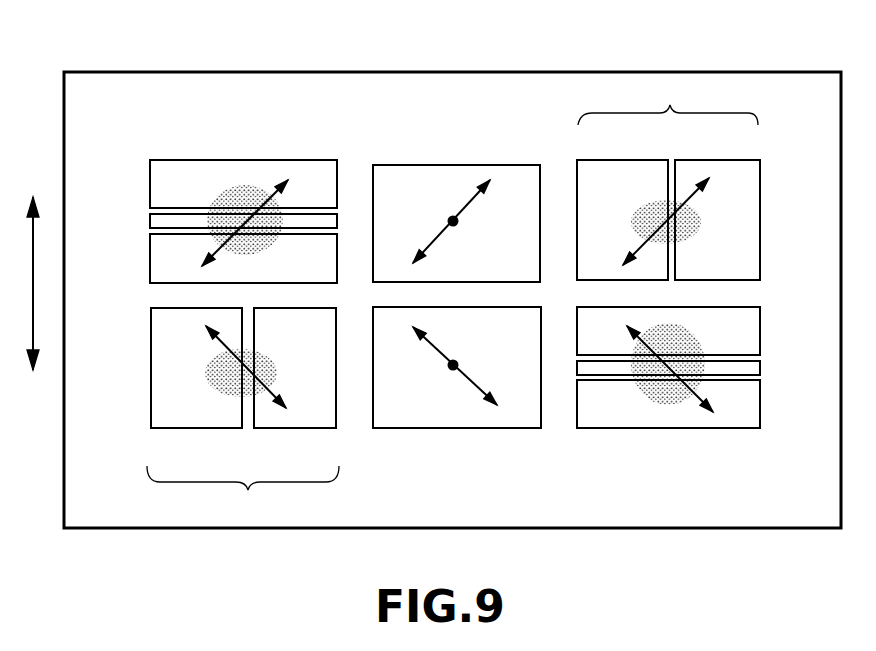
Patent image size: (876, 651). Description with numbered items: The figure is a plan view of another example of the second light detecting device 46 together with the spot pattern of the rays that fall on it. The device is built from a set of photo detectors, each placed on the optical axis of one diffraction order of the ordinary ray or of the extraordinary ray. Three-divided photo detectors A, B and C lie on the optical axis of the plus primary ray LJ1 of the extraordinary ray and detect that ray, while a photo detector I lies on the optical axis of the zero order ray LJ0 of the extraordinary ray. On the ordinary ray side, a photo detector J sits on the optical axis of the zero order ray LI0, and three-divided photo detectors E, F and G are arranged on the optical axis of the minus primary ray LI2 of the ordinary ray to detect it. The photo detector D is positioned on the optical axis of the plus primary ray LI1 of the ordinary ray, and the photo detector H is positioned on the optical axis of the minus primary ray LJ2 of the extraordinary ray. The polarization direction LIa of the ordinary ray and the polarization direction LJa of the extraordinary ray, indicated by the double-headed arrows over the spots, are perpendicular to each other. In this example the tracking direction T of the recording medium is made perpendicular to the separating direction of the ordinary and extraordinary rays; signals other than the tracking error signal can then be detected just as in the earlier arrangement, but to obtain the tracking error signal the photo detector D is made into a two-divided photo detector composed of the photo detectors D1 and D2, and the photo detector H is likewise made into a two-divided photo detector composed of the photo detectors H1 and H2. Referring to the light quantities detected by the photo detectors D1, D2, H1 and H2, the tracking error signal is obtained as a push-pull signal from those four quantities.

The second light detecting device 46 is at (727, 71).
The tracking direction T is at (25, 283).
The photo detector A is at (152, 188).
The photo detector B is at (152, 220).
The photo detector C is at (152, 265).
The photo detector D is at (243, 492).
The photo detector D1 is at (204, 420).
The photo detector D2 is at (303, 420).
The photo detector E is at (752, 403).
The photo detector F is at (752, 368).
The photo detector G is at (752, 333).
The photo detector H is at (668, 102).
The photo detector H1 is at (722, 172).
The photo detector H2 is at (626, 172).
The photo detector I is at (450, 178).
The photo detector J is at (465, 418).
The 0 order ray LJ0 is at (452, 219).
The + primary ray LJ1 is at (228, 193).
The − primary ray LJ2 is at (686, 225).
The polarization direction LJa is at (257, 200).
The 0 order ray LI0 is at (452, 368).
The + primary ray LI1 is at (222, 377).
The − primary ray LI2 is at (661, 390).
The polarization direction LIa is at (225, 356).